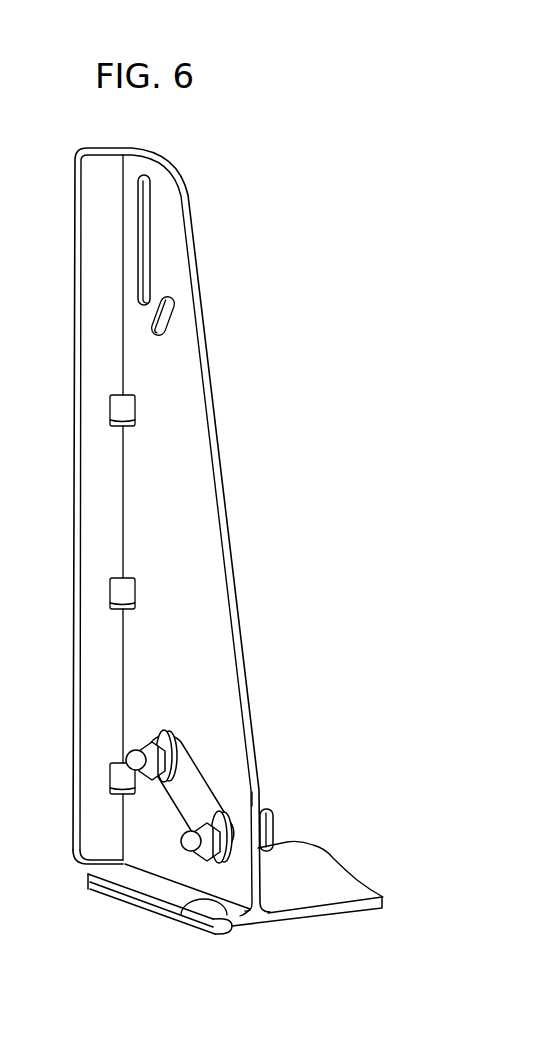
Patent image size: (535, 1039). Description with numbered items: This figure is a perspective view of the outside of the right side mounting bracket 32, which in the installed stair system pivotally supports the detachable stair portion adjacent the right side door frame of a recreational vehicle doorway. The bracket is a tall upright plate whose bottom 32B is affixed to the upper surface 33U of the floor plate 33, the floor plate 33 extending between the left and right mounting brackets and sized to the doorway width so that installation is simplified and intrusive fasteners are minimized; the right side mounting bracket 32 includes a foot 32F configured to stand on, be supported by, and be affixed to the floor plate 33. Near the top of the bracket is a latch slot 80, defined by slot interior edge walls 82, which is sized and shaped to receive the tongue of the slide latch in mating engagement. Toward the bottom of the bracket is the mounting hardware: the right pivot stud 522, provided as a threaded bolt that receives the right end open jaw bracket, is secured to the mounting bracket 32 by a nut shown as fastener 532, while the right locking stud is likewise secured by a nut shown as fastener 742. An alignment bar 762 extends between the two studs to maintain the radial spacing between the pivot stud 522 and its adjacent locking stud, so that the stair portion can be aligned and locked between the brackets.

The right side mounting bracket 32 is at (292, 393).
The floor plate 33 is at (333, 898).
The foot 32F is at (90, 892).
The bottom of mounting bracket 32B is at (193, 904).
The upper surface of floor plate 33U is at (250, 923).
The latch slot 80 is at (152, 257).
The slot interior edge walls 82 is at (148, 240).
The fastener 742 is at (163, 750).
The alignment bar 762 is at (192, 785).
The fastener 532 is at (255, 798).
The right pivot stud 522 is at (274, 829).